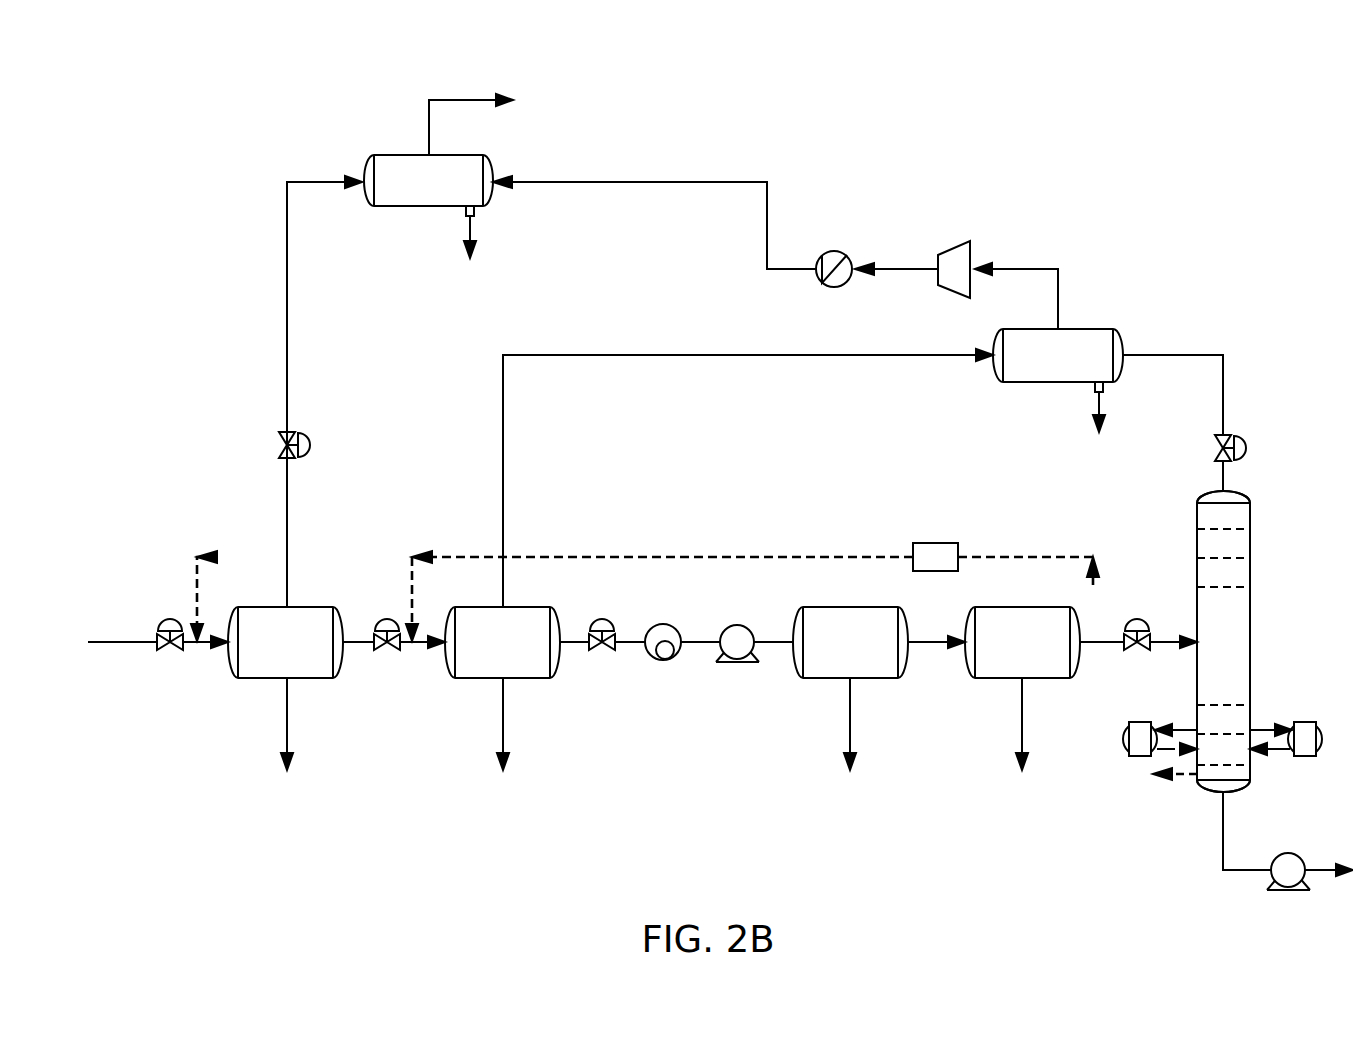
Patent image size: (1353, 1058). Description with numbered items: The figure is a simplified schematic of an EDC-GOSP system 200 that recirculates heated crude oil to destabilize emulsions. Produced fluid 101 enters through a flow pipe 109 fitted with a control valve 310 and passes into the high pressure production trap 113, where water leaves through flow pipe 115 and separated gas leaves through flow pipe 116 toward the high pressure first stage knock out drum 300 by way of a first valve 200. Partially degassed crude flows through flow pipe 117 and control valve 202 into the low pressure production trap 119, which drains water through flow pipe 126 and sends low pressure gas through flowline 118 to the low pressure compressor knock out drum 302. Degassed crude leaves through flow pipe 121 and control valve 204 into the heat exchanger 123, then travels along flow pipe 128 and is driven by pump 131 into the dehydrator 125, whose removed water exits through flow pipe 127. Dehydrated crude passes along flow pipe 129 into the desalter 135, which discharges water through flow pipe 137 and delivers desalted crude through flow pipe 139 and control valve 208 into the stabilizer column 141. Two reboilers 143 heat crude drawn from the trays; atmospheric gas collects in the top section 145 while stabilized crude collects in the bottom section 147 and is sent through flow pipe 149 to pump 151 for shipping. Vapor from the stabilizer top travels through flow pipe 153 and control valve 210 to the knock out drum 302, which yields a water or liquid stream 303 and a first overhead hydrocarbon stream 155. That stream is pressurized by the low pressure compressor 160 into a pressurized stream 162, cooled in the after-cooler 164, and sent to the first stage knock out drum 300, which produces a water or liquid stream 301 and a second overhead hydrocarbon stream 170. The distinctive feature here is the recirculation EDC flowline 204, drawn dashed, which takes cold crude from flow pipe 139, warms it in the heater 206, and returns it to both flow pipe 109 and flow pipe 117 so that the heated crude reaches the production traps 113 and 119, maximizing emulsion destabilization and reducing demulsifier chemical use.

The produced fluid 101 is at (101, 642).
The flow pipe 109 is at (119, 640).
The control valve 310 is at (168, 650).
The high pressure production trap 113 is at (267, 660).
The flow pipe 115 is at (288, 722).
The flow pipe 116 is at (288, 300).
The flow pipe 117 is at (356, 640).
The control valve 202 is at (385, 650).
The low pressure production trap 119 is at (485, 660).
The flow pipe 126 is at (504, 724).
The flowline 118 is at (504, 455).
The flow pipe 121 is at (573, 640).
The recirculation EDC flowline 204 is at (600, 650).
The heat exchanger 123 is at (663, 660).
The flow pipe 128 is at (699, 640).
The pump 131 is at (737, 664).
The dehydrator 125 is at (832, 660).
The flow pipe 127 is at (851, 724).
The flow pipe 129 is at (923, 640).
The desalter 135 is at (1004, 660).
The flow pipe 137 is at (1023, 724).
The flow pipe 139 is at (1096, 646).
The control valve 208 is at (1134, 618).
The heater 206 is at (934, 542).
The stabilizer column 141 is at (1205, 650).
The top section 145 is at (1238, 516).
The bottom section 147 is at (1240, 772).
The reboiler 143 is at (1142, 758).
The flow pipe 149 is at (1224, 832).
The pump 151 is at (1288, 892).
The flow pipe 153 is at (1224, 398).
The control valve 210 is at (1247, 446).
The low pressure compressor knock out drum 302 is at (1040, 373).
The water or liquid stream 303 is at (1100, 398).
The first overhead hydrocarbon stream 155 is at (1023, 268).
The low pressure compressor 160 is at (951, 246).
The pressurized first overhead hydrocarbon stream 162 is at (904, 268).
The low pressure after-cooler 164 is at (832, 250).
The high pressure first stage knock out drum 300 is at (411, 198).
The water or liquid stream 301 is at (473, 224).
The second overhead hydrocarbon stream 170 is at (469, 96).
The EDC-GOSP system 200 is at (783, 94).